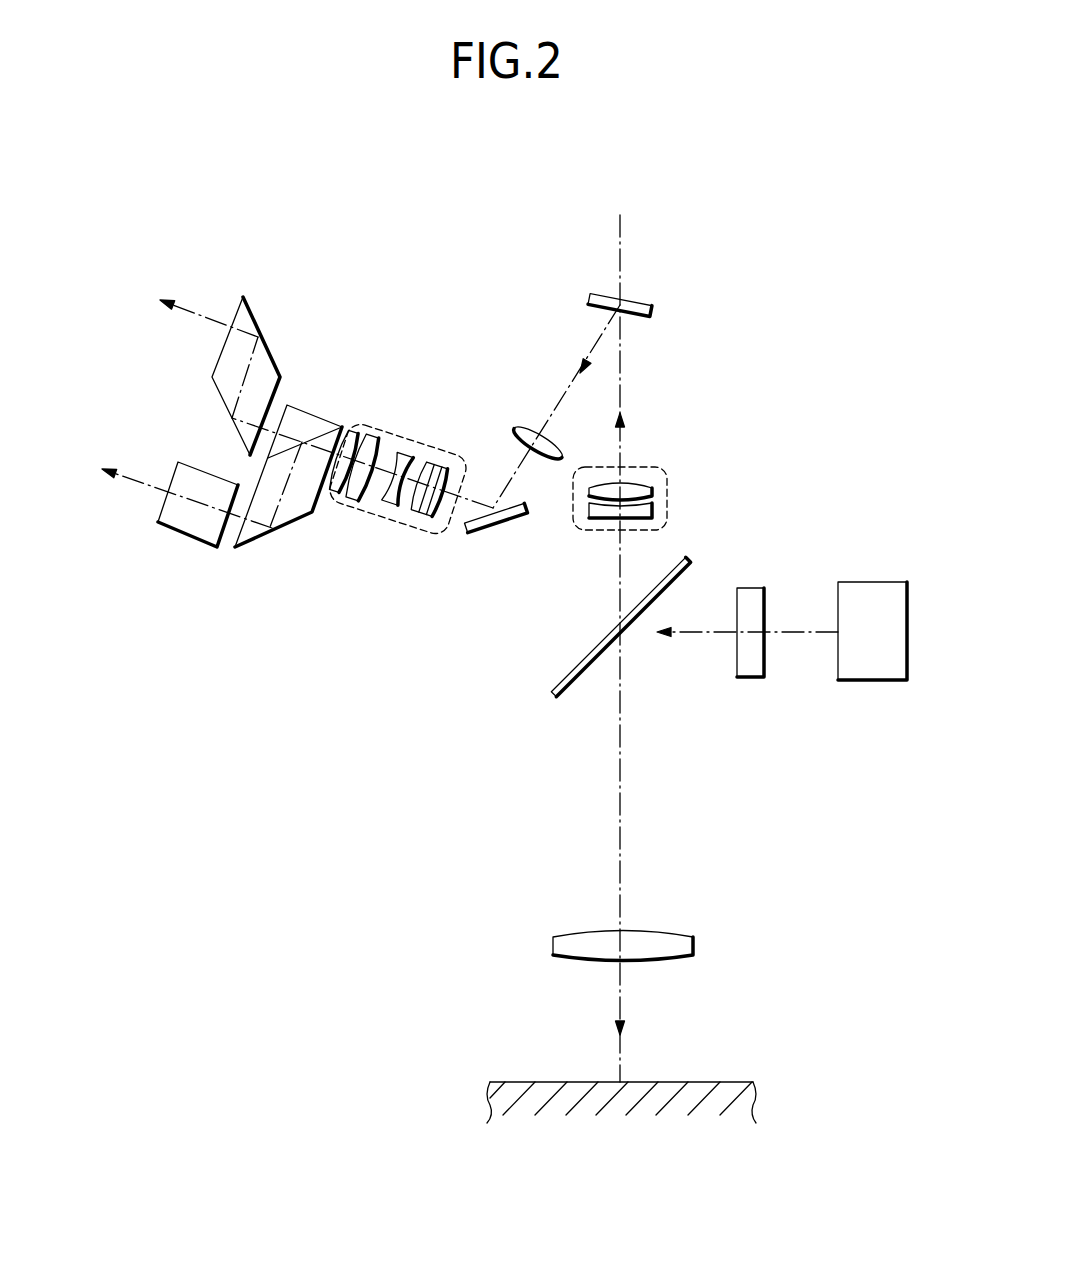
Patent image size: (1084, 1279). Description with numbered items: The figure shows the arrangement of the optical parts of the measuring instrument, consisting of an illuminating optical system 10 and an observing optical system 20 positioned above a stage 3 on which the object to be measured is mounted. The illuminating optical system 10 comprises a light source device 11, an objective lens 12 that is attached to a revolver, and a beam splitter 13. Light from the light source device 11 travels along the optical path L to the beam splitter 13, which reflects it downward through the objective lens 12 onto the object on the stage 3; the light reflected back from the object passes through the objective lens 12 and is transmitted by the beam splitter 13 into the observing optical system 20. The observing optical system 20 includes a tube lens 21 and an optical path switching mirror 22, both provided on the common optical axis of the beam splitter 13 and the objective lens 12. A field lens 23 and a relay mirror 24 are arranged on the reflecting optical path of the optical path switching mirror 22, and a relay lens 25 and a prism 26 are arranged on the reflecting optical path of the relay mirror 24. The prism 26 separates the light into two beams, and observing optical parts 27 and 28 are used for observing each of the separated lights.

The stage 3 is at (514, 1082).
The illuminating optical system 10 is at (775, 792).
The light source device 11 is at (873, 684).
The objective lens 12 is at (672, 930).
The beam splitter 13 is at (568, 694).
The optical path L is at (717, 636).
The observing optical system 20 is at (414, 272).
The tube lens 21 is at (667, 488).
The optical path switching mirror 22 is at (647, 297).
The field lens 23 is at (523, 421).
The relay mirror 24 is at (482, 537).
The relay lens 25 is at (415, 430).
The prism 26 is at (320, 416).
The observing optical part 27 is at (272, 353).
The observing optical part 28 is at (193, 538).